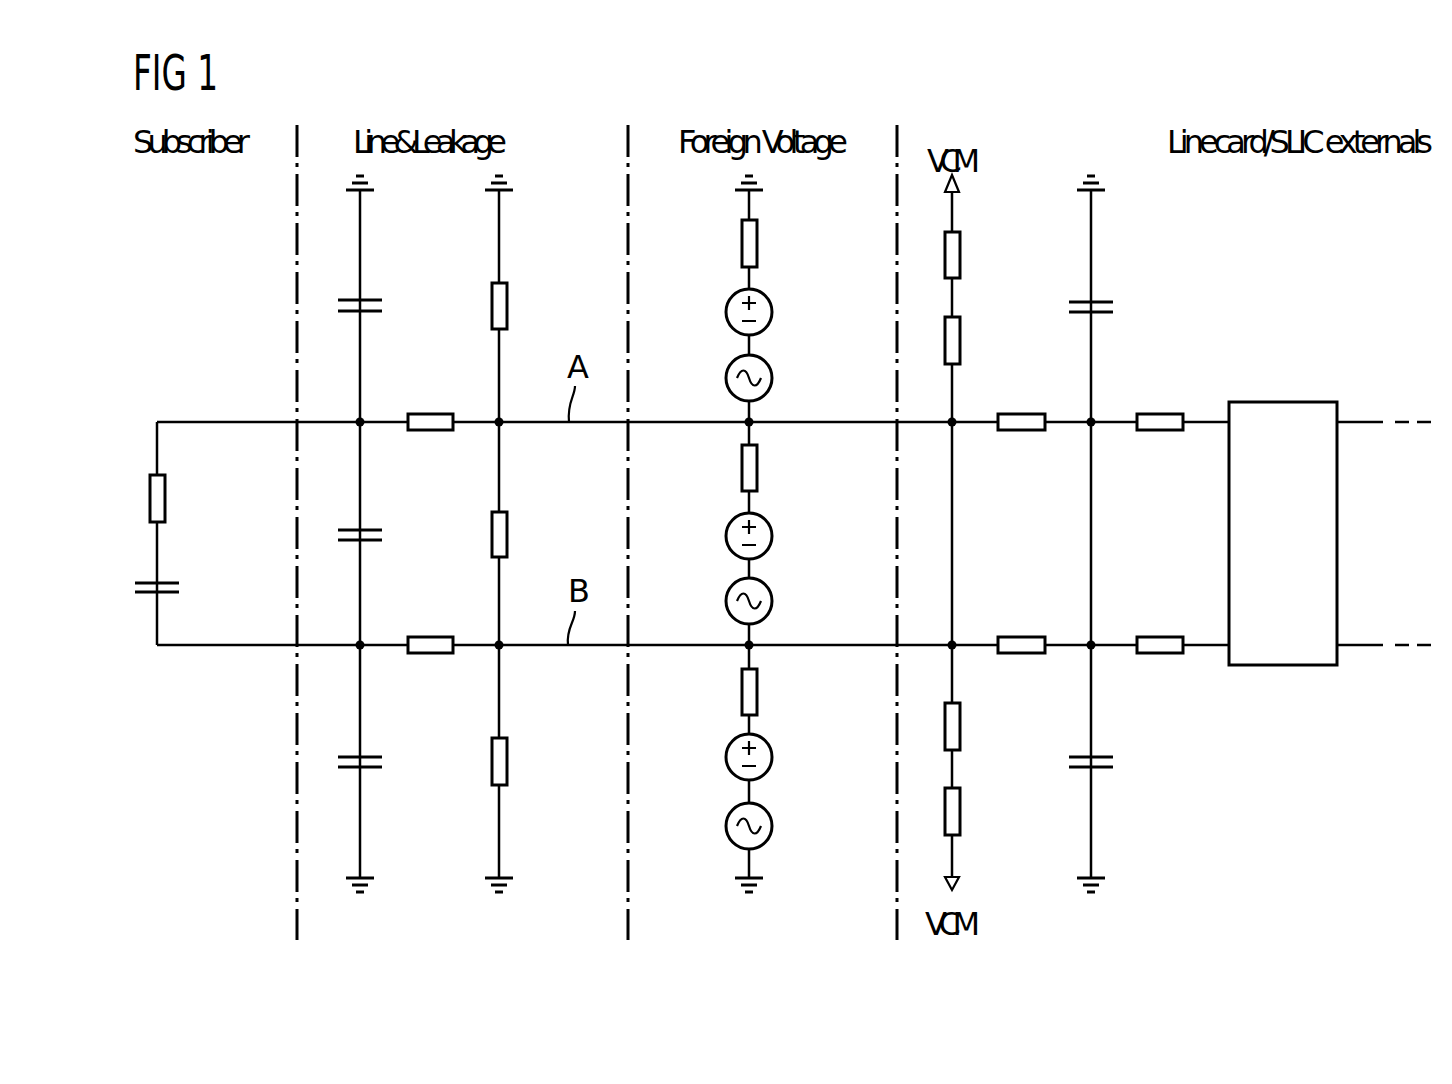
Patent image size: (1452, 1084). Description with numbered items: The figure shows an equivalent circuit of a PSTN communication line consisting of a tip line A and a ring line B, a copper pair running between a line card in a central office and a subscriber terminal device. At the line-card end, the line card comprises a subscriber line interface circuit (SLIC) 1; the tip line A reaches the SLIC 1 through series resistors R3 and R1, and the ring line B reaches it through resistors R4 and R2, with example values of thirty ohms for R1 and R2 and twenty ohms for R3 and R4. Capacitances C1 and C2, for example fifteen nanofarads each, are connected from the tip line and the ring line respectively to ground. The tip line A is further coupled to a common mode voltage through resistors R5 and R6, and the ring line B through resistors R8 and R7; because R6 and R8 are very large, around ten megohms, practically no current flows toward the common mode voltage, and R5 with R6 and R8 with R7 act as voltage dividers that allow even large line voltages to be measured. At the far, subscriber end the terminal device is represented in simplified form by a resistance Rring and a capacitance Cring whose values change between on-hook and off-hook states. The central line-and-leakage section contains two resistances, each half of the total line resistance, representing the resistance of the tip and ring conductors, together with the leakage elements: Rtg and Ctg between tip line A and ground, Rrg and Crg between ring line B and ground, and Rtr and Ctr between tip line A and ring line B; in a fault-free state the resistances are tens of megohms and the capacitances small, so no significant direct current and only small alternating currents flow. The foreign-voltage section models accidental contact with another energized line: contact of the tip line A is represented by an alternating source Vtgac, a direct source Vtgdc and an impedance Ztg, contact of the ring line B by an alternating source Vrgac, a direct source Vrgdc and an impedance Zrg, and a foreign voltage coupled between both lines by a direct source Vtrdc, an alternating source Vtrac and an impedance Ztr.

The subscriber line interface circuit (SLIC) 1 is at (1283, 402).
The resistance Rring is at (165, 500).
The capacitance Cring is at (180, 590).
The leak capacitance Ctg is at (383, 310).
The leak capacitance Ctr is at (383, 538).
The leak capacitance Crg is at (383, 765).
The leak resistance Rtg is at (507, 308).
The leak resistance Rtr is at (507, 538).
The leak resistance Rrg is at (507, 762).
The impedance Ztg is at (757, 245).
The DC voltage source Vtgdc is at (772, 310).
The AC voltage source Vtgac is at (772, 378).
The impedance Ztr is at (757, 470).
The DC voltage source Vtrdc is at (772, 534).
The AC voltage source Vtrac is at (772, 601).
The impedance Zrg is at (757, 694).
The DC voltage source Vrgdc is at (772, 755).
The AC voltage source Vrgac is at (772, 826).
The resistor R1 is at (1160, 430).
The resistor R2 is at (1160, 637).
The resistor R3 is at (1022, 430).
The resistor R4 is at (1022, 637).
The resistor R5 is at (960, 257).
The resistor R6 is at (960, 342).
The resistor R7 is at (960, 813).
The resistor R8 is at (960, 728).
The capacitance C1 is at (1114, 310).
The capacitance C2 is at (1114, 765).